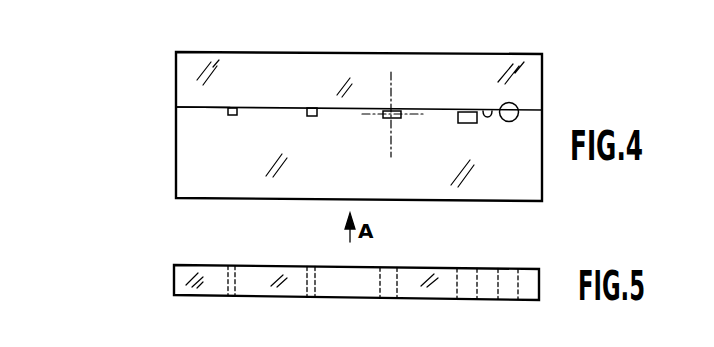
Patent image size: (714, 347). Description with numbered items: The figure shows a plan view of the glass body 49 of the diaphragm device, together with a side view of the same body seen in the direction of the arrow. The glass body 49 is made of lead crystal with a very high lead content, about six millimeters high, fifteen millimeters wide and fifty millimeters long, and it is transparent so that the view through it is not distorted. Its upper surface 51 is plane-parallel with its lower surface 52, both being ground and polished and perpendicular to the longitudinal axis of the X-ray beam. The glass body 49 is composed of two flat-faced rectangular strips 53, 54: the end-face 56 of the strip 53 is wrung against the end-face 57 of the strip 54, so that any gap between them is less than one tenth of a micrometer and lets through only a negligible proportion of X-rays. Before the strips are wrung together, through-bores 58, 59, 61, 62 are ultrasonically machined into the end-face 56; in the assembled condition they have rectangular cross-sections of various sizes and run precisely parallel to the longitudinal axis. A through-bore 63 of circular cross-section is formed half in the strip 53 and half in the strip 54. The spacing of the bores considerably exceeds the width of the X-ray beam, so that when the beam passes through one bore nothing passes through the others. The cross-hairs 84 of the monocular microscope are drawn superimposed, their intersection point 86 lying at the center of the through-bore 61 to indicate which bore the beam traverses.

In FIG. 4, the glass body 49 is at (100, 132).
In FIG. 5, the upper surface 51 is at (245, 265).
In FIG. 5, the lower surface 52 is at (262, 297).
In FIG. 4, the rectangular strip 53 is at (188, 75).
In FIG. 4, the rectangular strip 54 is at (197, 167).
In FIG. 4, the end-face 56 is at (190, 107).
In FIG. 4, the end-face 57 is at (487, 109).
In FIG. 4, the through-bore 58 is at (233, 116).
In FIG. 4, the through-bore 59 is at (312, 117).
In FIG. 4, the through-bore 61 is at (401, 118).
In FIG. 4, the through-bore 62 is at (470, 123).
In FIG. 4, the through-bore 63 is at (518, 112).
In FIG. 4, the cross-hairs 84 is at (390, 86).
In FIG. 4, the intersection point 86 is at (398, 110).